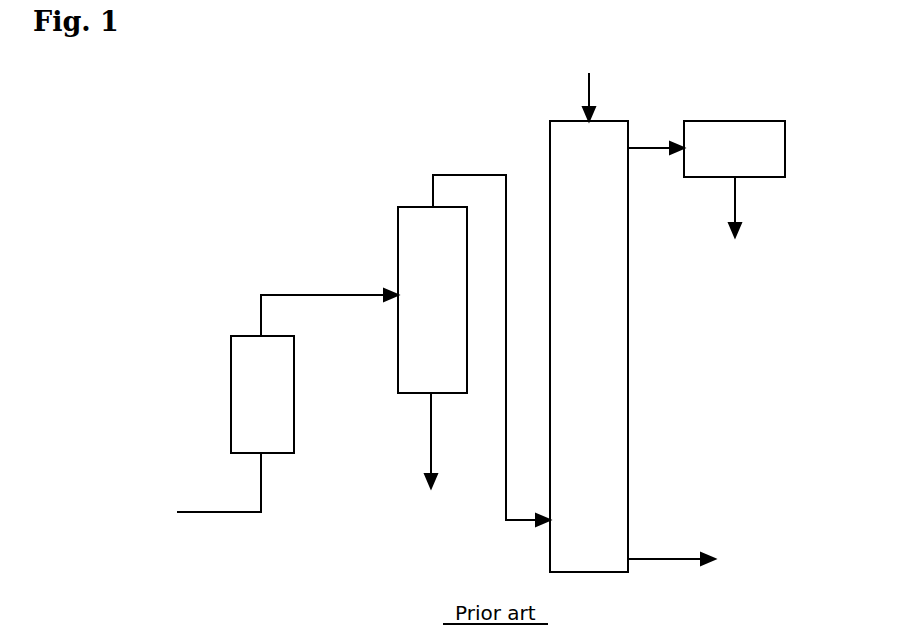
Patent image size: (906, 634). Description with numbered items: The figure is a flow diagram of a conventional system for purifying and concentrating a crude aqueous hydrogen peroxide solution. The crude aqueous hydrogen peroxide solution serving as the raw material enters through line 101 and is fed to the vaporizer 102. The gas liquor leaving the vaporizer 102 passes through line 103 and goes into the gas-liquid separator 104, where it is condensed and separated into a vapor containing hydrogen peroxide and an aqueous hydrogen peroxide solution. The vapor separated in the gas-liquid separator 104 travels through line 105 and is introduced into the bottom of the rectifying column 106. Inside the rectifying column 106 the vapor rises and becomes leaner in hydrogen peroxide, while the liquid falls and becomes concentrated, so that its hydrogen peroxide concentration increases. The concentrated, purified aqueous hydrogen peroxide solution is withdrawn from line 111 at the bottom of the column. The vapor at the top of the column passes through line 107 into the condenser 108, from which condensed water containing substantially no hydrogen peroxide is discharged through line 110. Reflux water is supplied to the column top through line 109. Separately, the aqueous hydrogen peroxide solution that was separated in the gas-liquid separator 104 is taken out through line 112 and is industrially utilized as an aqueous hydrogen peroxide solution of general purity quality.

The line 101 is at (218, 509).
The vaporizer 102 is at (294, 382).
The line 103 is at (350, 293).
The gas-liquid separator 104 is at (398, 207).
The line 105 is at (472, 174).
The rectifying column 106 is at (628, 310).
The line 107 is at (653, 147).
The condenser 108 is at (733, 120).
The line 109 is at (589, 92).
The line 110 is at (755, 205).
The line 111 is at (675, 558).
The line 112 is at (431, 437).